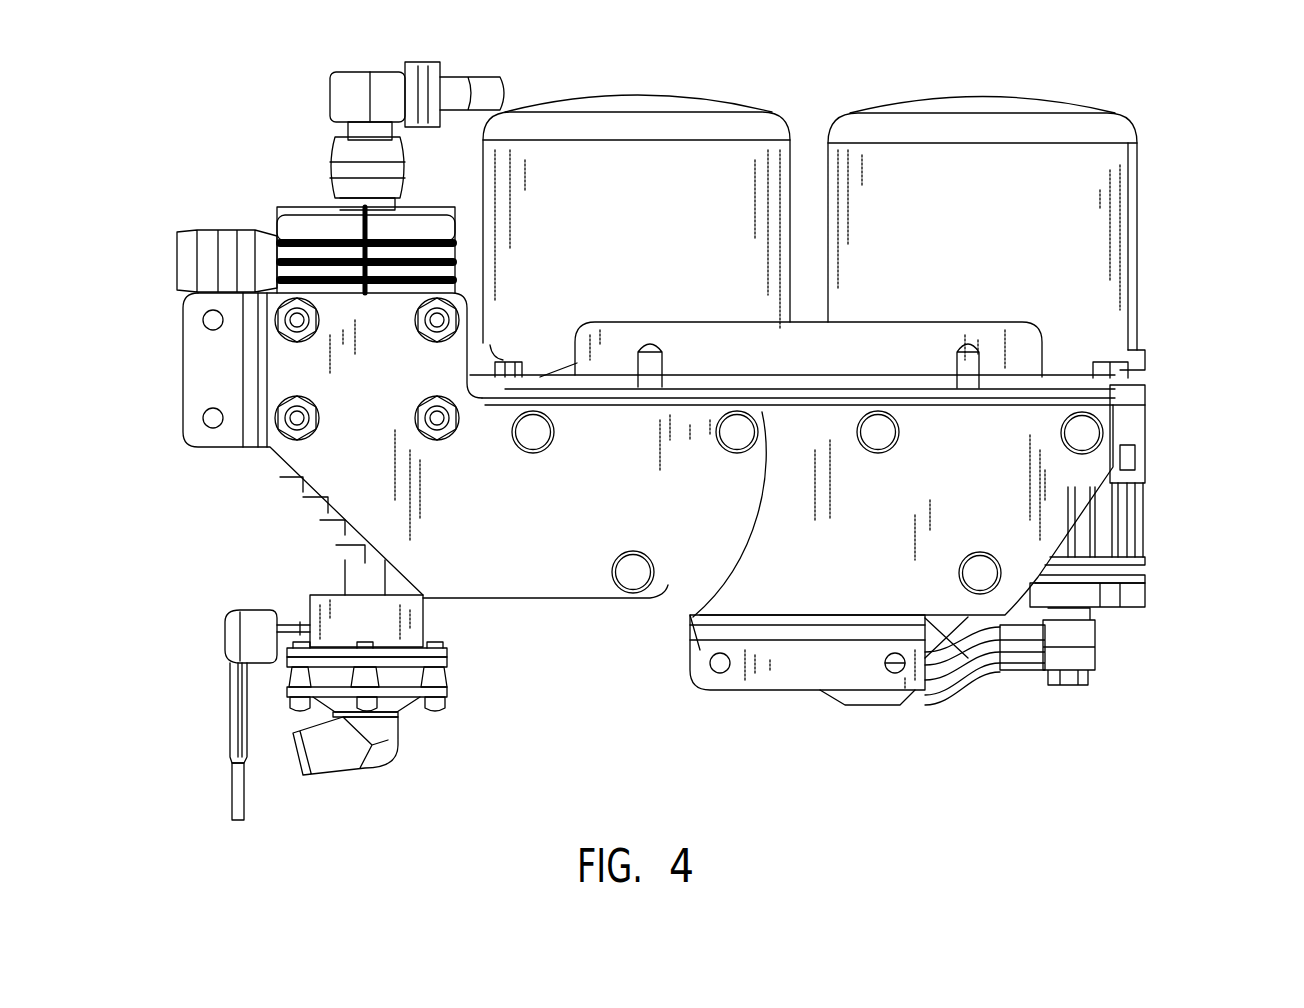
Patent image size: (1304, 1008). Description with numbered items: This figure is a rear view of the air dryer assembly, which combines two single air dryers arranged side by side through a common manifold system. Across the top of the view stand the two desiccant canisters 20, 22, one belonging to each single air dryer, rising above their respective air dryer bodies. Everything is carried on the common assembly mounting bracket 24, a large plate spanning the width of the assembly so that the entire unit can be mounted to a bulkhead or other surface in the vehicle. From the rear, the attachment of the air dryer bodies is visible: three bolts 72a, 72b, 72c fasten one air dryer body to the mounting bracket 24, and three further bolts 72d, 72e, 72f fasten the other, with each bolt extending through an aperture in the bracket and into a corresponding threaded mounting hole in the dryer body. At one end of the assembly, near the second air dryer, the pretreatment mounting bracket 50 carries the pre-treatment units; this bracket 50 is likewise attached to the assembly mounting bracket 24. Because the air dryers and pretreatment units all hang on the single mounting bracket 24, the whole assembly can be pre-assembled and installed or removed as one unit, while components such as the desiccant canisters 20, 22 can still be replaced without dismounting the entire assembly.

The desiccant canister 20 is at (995, 95).
The desiccant canister 22 is at (648, 105).
The mounting bracket 24 is at (1067, 497).
The bracket 50 is at (320, 458).
The bolt 72a is at (527, 438).
The bolt 72b is at (757, 443).
The bolt 72c is at (633, 578).
The bolt 72d is at (883, 426).
The bolt 72e is at (1090, 435).
The bolt 72f is at (977, 578).